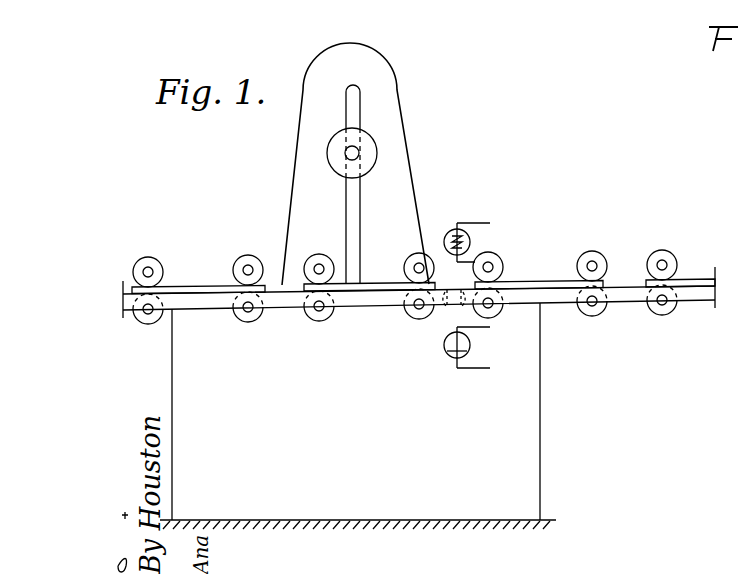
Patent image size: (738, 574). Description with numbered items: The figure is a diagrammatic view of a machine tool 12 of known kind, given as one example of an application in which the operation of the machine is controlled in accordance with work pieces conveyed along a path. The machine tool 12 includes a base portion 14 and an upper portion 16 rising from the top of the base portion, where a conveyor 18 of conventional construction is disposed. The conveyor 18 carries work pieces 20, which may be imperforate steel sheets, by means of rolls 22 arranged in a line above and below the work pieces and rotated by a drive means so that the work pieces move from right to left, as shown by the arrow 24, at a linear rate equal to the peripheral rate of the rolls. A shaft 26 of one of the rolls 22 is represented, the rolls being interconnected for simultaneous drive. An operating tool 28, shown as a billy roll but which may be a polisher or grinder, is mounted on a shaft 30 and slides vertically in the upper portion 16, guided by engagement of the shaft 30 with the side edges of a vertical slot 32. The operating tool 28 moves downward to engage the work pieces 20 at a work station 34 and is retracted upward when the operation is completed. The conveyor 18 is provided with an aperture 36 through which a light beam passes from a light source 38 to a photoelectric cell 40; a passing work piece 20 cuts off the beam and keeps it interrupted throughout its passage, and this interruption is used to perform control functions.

The machine tool 12 is at (242, 183).
The base portion 14 is at (542, 450).
The upper portion 16 is at (400, 76).
The conveyor 18 is at (200, 305).
The work pieces 20 is at (207, 271).
The rolls 22 is at (155, 258).
The arrow 24 is at (515, 275).
The shaft 26 is at (663, 257).
The operating tool 28 is at (366, 142).
The shaft 30 is at (346, 149).
The vertical slot 32 is at (360, 212).
The work station 34 is at (370, 264).
The aperture 36 is at (451, 304).
The light source 38 is at (450, 230).
The photoelectric cell 40 is at (446, 352).